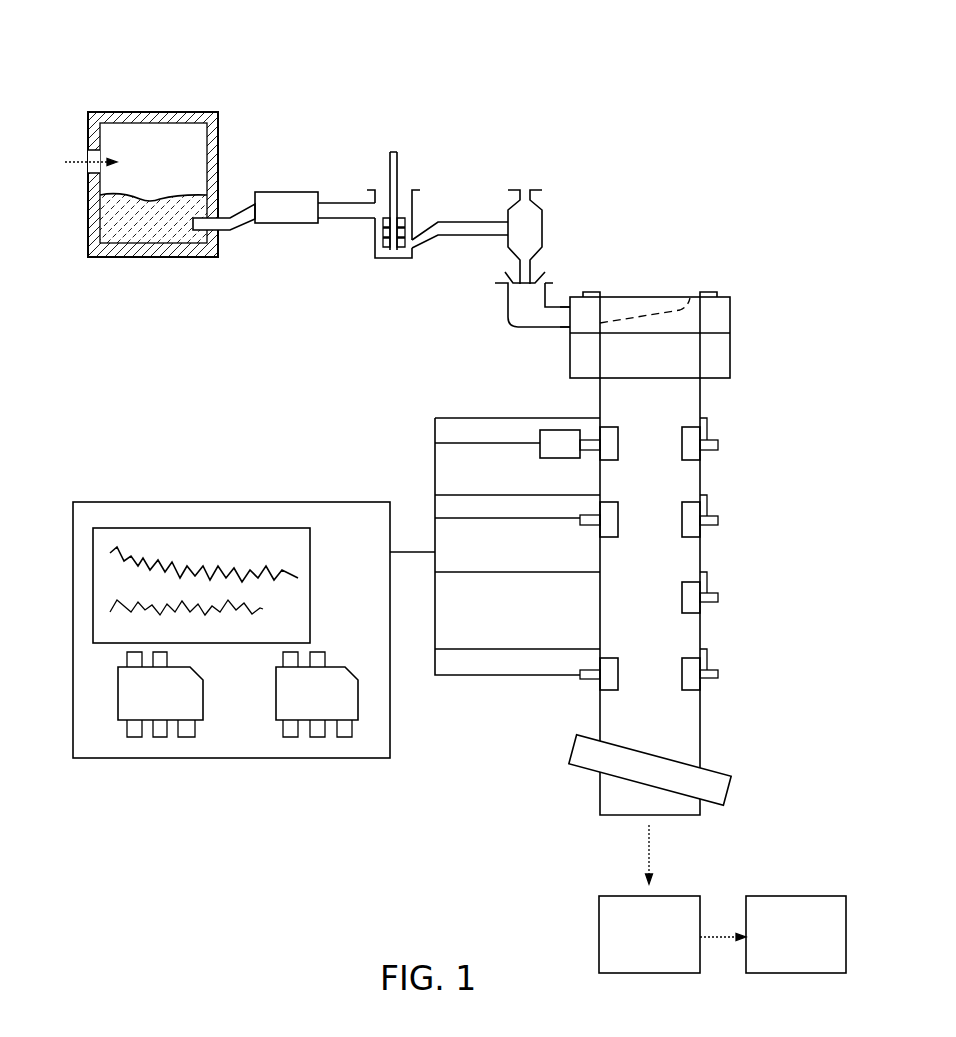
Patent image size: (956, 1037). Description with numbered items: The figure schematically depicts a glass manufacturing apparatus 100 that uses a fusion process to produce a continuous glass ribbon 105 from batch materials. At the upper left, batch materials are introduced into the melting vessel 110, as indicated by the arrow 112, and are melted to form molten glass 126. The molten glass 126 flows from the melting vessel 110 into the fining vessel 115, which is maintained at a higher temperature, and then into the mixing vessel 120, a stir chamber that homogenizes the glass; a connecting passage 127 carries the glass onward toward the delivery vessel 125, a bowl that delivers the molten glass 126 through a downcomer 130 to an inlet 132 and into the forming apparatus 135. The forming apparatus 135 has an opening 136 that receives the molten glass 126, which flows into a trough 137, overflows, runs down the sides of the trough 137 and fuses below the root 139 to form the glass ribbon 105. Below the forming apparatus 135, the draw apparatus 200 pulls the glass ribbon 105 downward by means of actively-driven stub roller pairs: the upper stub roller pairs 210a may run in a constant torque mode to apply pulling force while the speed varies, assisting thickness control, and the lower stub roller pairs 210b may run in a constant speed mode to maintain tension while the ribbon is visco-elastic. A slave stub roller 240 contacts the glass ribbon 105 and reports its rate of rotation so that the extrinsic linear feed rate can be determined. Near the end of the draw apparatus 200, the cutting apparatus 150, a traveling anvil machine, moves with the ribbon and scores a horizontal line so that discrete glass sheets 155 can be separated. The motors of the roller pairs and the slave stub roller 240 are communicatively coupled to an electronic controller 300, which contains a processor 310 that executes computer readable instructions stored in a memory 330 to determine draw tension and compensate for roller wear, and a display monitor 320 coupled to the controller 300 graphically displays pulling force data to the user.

The glass manufacturing apparatus 100 is at (655, 61).
The melting vessel 110 is at (157, 110).
The arrow 112 is at (72, 160).
The molten glass 126 is at (150, 202).
The fining vessel 115 is at (290, 192).
The mixing vessel 120 is at (413, 205).
The conduit 127 is at (465, 237).
The delivery vessel 125 is at (542, 212).
The downcomer 130 is at (535, 268).
The inlet 132 is at (510, 327).
The opening 136 is at (568, 330).
The forming apparatus 135 is at (696, 321).
The trough 137 is at (660, 302).
The root 139 is at (660, 378).
The draw apparatus 200 is at (830, 361).
The glass ribbon 105 is at (597, 607).
The upper stub roller pairs 210a is at (538, 450).
The lower stub roller pairs 210b is at (578, 525).
The slave stub roller 240 is at (720, 597).
The cutting apparatus 150 is at (570, 757).
The glass sheets 155 is at (634, 946).
The electronic controller 300 is at (236, 577).
The display monitor 320 is at (310, 582).
The processor 310 is at (140, 703).
The memory 330 is at (300, 703).